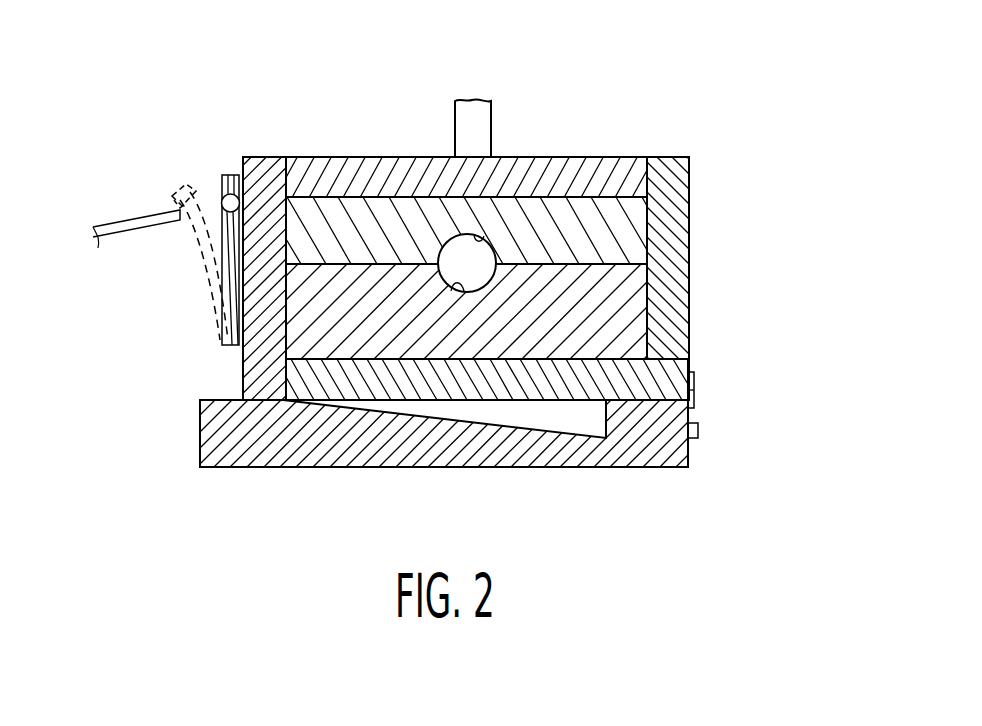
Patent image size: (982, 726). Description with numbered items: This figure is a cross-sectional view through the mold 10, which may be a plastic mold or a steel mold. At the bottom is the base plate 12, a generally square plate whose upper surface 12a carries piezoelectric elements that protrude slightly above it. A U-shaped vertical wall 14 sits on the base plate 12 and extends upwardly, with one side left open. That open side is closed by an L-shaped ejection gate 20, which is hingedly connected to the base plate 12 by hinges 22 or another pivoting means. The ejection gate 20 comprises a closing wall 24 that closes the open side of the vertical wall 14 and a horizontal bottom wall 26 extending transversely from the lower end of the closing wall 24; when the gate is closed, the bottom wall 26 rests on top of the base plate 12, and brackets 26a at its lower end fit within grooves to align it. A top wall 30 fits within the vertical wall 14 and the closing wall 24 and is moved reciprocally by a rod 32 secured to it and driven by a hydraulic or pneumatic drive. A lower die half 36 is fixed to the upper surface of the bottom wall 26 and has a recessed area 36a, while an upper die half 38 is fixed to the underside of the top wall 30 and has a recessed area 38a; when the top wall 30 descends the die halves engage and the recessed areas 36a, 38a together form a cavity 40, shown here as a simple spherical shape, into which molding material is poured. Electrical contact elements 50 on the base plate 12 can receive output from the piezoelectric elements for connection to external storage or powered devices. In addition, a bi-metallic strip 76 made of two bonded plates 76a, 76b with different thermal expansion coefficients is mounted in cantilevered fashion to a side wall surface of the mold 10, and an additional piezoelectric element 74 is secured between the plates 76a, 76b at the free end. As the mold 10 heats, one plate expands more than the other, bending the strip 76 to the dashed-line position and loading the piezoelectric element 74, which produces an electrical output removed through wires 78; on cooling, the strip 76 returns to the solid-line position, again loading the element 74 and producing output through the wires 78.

The mold 10 is at (737, 102).
The base plate 12 is at (222, 468).
The upper surface of base plate 12a is at (210, 400).
The U-shaped vertical wall 14 is at (263, 175).
The L-shaped ejection gate 20 is at (693, 227).
The hinges 22 is at (695, 380).
The closing wall 24 is at (665, 175).
The horizontal bottom wall 26 is at (640, 385).
The brackets 26a is at (560, 420).
The top wall 30 is at (578, 158).
The rod 32 is at (454, 104).
The lower die half 36 is at (632, 299).
The recessed area 36a is at (456, 292).
The upper die half 38 is at (328, 205).
The recessed area 38a is at (480, 241).
The cavity 40 is at (461, 247).
The electrical contact elements 50 is at (699, 430).
The additional piezoelectric element 74 is at (190, 222).
The bi-metallic strip 76 is at (207, 291).
The plate 76a is at (170, 196).
The plate 76b is at (188, 188).
The wires 78 is at (105, 236).